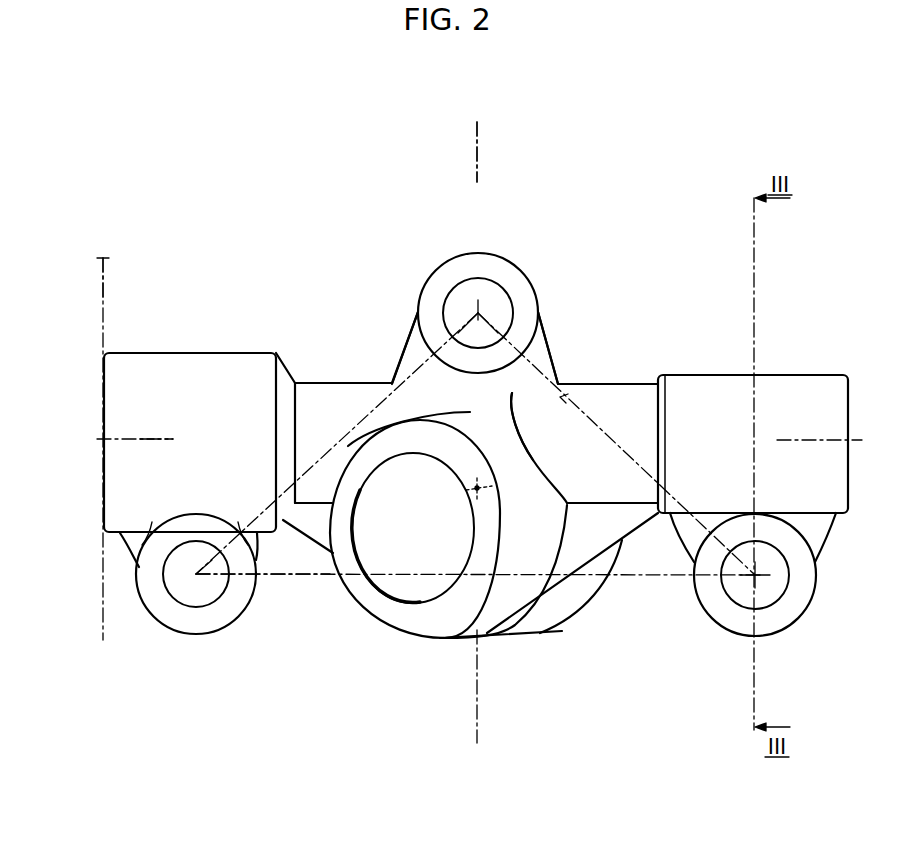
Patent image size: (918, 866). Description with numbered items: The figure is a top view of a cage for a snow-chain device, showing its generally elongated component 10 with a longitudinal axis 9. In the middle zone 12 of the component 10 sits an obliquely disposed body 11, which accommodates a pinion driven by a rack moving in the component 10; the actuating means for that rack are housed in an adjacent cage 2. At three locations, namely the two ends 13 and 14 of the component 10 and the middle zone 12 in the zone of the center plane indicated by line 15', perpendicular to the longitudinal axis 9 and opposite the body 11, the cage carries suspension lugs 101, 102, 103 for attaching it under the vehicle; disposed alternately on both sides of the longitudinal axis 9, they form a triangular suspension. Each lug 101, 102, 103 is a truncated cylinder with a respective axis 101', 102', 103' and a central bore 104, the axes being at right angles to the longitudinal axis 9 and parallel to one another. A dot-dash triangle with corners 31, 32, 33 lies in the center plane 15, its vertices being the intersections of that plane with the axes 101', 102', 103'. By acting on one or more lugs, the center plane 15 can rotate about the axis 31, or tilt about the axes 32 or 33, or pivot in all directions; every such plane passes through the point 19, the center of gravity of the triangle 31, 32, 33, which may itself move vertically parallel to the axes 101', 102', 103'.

The cage 2 is at (103, 272).
The longitudinal axis 9 is at (158, 434).
The component 10 is at (347, 395).
The body 11 is at (417, 638).
The middle zone 12 is at (498, 413).
The end 13 is at (196, 366).
The end 14 is at (757, 390).
The center plane 15 is at (263, 561).
The line of the center plane 15' is at (504, 148).
The point 19 is at (477, 488).
The triangle corner 31 is at (300, 567).
The triangle corner 32 is at (589, 383).
The triangle corner 33 is at (418, 367).
The lug 101 is at (478, 287).
The lug axis 101' is at (536, 307).
The lug 102 is at (189, 590).
The lug axis 102' is at (210, 622).
The lug 103 is at (753, 592).
The lug axis 103' is at (709, 603).
The central bore 104 is at (493, 286).